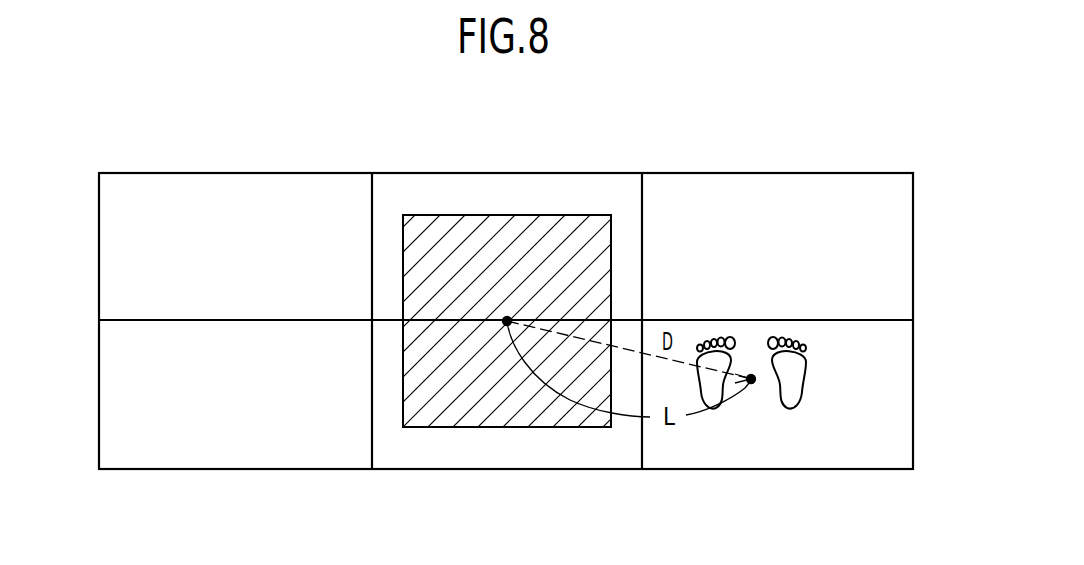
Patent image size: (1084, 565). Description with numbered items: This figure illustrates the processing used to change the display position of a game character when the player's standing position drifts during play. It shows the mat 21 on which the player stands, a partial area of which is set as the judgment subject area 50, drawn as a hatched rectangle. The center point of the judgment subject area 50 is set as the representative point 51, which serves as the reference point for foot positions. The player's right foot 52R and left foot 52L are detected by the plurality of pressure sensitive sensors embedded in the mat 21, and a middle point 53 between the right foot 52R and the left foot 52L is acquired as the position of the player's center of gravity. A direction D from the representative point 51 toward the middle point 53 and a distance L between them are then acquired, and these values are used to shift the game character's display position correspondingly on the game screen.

The mat 21 is at (753, 173).
The judgment subject area 50 is at (448, 420).
The representative point 51 is at (507, 321).
The left foot 52L is at (713, 333).
The right foot 52R is at (790, 332).
The middle point 53 is at (751, 379).